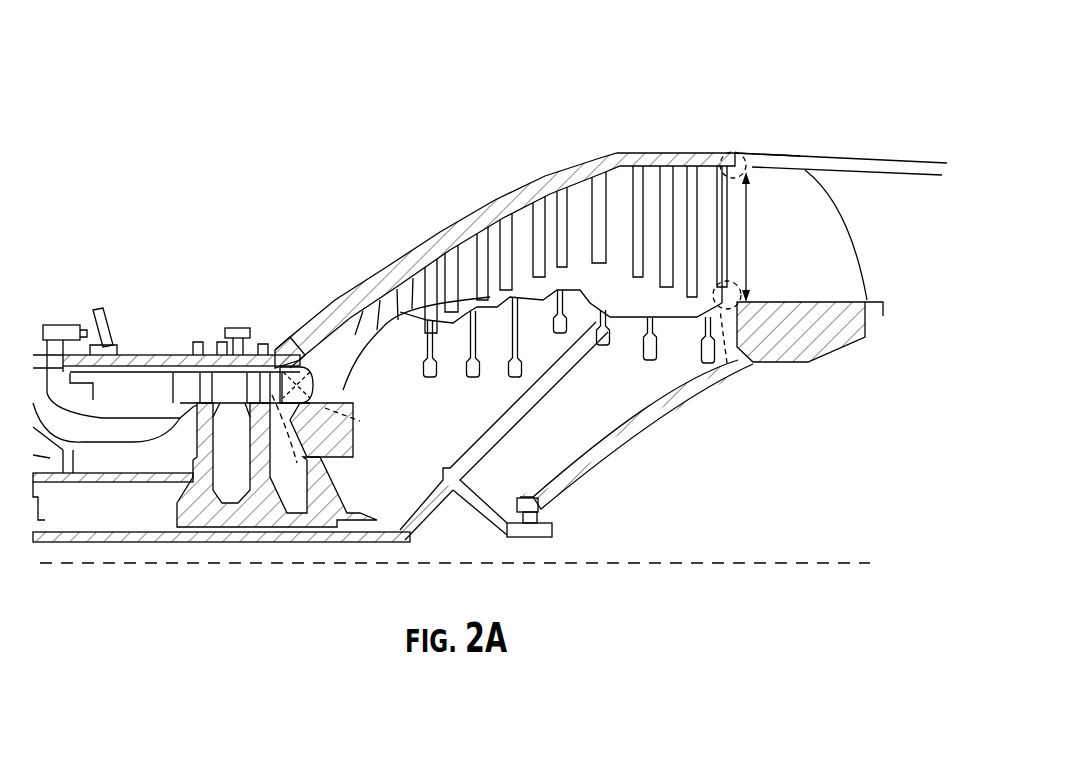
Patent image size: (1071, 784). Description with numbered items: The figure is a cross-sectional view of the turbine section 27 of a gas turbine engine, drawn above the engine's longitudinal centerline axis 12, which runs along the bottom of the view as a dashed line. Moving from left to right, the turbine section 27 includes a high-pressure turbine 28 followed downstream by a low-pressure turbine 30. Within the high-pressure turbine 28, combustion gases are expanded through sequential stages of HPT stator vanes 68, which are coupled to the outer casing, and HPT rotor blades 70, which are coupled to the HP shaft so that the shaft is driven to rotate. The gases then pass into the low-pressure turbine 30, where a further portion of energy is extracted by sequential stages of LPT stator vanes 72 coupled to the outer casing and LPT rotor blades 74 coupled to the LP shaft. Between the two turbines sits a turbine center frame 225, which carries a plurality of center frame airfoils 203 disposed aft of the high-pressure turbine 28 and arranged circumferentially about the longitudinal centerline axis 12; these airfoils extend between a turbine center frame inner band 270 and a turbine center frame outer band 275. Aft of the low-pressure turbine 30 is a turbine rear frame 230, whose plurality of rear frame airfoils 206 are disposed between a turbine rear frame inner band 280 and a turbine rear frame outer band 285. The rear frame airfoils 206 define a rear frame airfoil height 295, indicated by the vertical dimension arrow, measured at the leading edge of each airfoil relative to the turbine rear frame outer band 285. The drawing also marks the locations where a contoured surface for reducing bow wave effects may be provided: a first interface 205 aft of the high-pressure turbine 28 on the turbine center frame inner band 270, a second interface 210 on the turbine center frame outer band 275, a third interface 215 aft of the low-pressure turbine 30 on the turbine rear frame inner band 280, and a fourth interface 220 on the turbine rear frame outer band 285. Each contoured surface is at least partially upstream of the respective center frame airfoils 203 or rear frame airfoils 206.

The longitudinal centerline axis 12 is at (835, 563).
The turbine section 27 is at (235, 122).
The high-pressure turbine 28 is at (155, 253).
The low-pressure turbine 30 is at (630, 55).
The HPT stator vanes 68 is at (185, 392).
The HPT rotor blades 70 is at (207, 390).
The LPT stator vanes 72 is at (453, 260).
The LPT rotor blades 74 is at (477, 247).
The center frame airfoils 203 is at (314, 320).
The first interface 205 is at (297, 463).
The rear frame airfoils 206 is at (820, 230).
The second interface 210 is at (360, 421).
The third interface 215 is at (733, 370).
The fourth interface 220 is at (757, 158).
The turbine center frame 225 is at (281, 338).
The turbine rear frame 230 is at (808, 145).
The turbine center frame inner band 270 is at (345, 407).
The turbine center frame outer band 275 is at (388, 277).
The turbine rear frame inner band 280 is at (813, 330).
The turbine rear frame outer band 285 is at (857, 165).
The rear frame airfoil height 295 is at (750, 253).